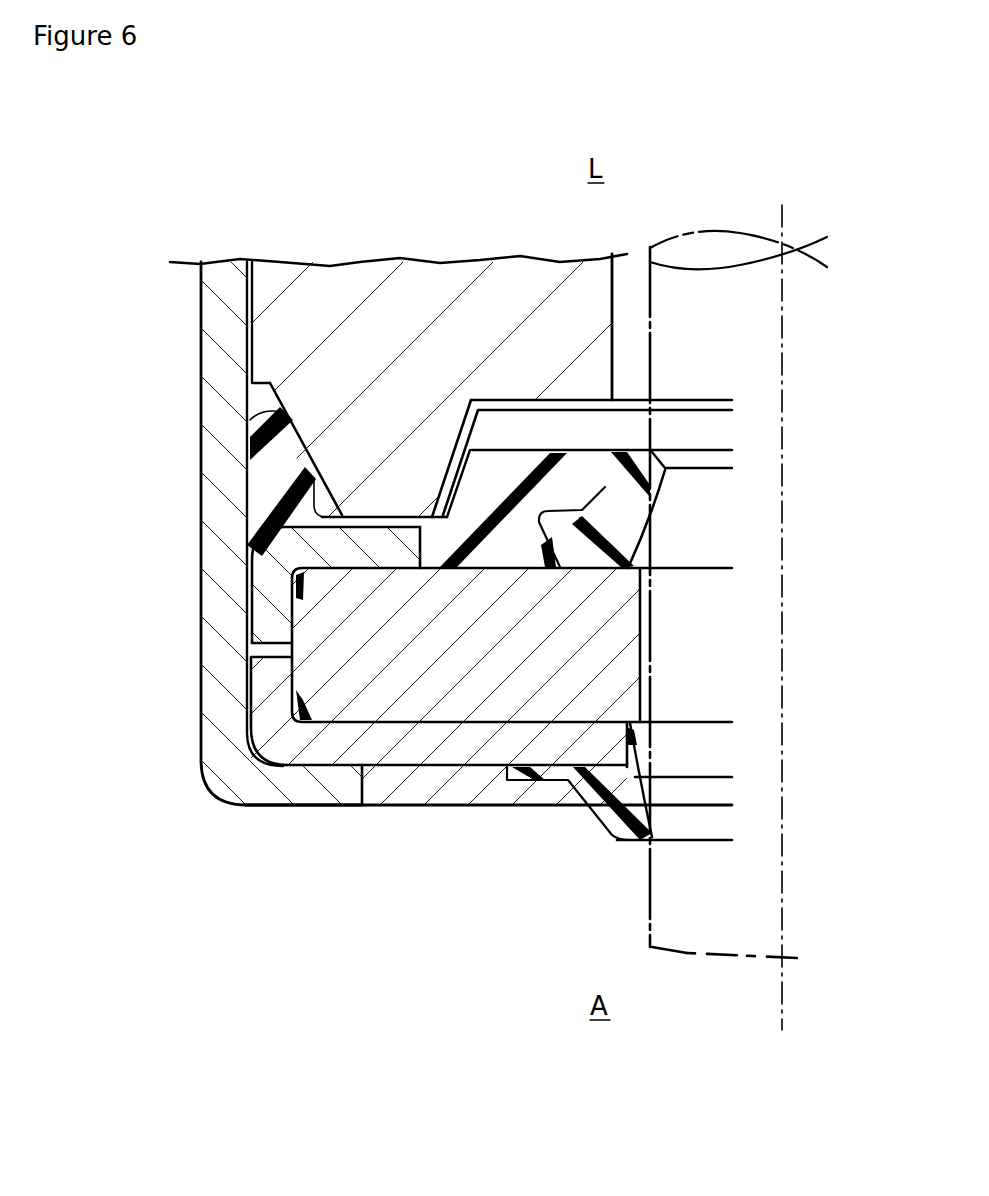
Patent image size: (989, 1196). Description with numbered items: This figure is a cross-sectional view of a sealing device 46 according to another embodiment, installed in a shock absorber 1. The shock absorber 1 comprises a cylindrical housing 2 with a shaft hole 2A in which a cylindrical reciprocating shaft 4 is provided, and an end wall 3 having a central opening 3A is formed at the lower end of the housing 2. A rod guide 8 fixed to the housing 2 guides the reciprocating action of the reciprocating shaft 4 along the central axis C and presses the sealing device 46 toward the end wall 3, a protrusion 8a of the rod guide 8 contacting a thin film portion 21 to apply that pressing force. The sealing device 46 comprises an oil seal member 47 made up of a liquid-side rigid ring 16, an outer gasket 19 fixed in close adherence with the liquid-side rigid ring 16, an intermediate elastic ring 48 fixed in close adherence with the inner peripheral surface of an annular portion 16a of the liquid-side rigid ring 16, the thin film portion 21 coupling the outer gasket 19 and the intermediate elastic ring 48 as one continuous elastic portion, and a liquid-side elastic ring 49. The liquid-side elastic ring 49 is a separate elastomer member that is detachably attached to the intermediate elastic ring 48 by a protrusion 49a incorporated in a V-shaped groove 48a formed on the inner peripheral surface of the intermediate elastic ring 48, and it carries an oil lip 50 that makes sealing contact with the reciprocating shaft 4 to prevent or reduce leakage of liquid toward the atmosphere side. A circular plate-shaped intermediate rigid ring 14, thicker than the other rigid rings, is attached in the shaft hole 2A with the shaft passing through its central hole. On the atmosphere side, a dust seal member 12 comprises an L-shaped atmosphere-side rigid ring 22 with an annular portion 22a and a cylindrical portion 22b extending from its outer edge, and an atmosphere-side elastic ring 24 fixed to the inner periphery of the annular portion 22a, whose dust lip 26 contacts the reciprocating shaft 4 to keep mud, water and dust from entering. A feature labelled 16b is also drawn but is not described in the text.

The shock absorber 1 is at (226, 903).
The housing 2 is at (201, 521).
The shaft hole 2A is at (286, 340).
The end wall 3 is at (315, 790).
The opening 3A is at (390, 788).
The reciprocating shaft 4 is at (650, 928).
The rod guide 8 is at (437, 278).
The protrusion 8a is at (463, 438).
The dust seal member 12 is at (650, 793).
The intermediate rigid ring 14 is at (623, 660).
The liquid-side rigid ring 16 is at (262, 557).
The annular portion 16a is at (428, 515).
The lip of outer seal body 16b is at (250, 599).
The outer gasket 19 is at (262, 472).
The thin film portion 21 is at (368, 520).
The atmosphere-side rigid ring 22 is at (258, 668).
The annular portion 22a is at (438, 757).
The cylindrical portion 22b is at (262, 714).
The atmosphere-side elastic ring 24 is at (570, 777).
The dust lip 26 is at (652, 815).
The sealing device 46 is at (224, 625).
The oil seal member 47 is at (640, 450).
The intermediate elastic ring 48 is at (532, 462).
The V-shaped groove 48a is at (585, 513).
The liquid-side elastic ring 49 is at (635, 532).
The protrusion 49a is at (540, 537).
The oil lip 50 is at (663, 467).
The central axis C is at (782, 783).